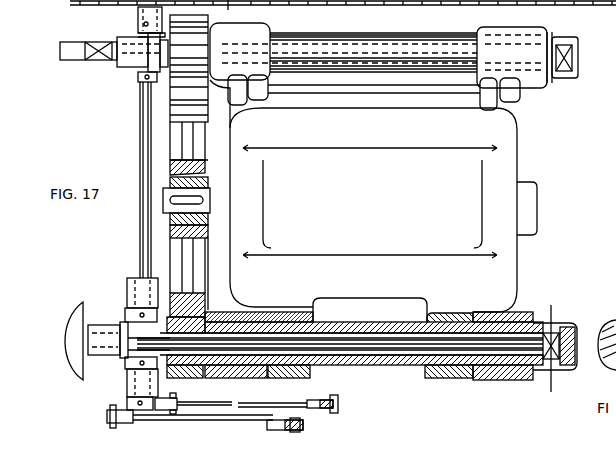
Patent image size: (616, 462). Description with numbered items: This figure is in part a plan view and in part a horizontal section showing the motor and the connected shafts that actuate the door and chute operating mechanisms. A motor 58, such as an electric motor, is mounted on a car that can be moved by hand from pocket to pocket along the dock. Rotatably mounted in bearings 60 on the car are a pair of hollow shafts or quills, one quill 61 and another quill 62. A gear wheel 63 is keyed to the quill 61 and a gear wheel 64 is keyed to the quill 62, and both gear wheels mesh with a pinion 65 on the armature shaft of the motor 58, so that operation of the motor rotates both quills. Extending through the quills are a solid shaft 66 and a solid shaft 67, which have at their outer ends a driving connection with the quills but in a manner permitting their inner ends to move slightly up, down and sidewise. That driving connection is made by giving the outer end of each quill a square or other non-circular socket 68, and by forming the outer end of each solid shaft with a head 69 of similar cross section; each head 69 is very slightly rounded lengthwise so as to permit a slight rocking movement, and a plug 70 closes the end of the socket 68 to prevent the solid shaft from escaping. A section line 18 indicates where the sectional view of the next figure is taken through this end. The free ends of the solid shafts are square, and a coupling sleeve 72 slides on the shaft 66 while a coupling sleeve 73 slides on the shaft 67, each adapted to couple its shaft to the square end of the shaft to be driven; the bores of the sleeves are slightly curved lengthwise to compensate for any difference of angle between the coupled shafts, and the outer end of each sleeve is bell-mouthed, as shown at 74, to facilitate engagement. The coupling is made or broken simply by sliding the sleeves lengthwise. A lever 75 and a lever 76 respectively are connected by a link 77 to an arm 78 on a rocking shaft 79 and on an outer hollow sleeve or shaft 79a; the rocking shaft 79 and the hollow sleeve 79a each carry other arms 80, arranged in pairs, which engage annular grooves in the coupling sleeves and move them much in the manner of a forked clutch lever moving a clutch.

The section line 18 is at (552, 350).
The motor 58 is at (373, 198).
The bearings 60 is at (500, 378).
The hollow shaft or quill 61 is at (383, 365).
The hollow shaft or quill 62 is at (378, 38).
The gear wheel 63 is at (196, 276).
The gear wheel 64 is at (196, 124).
The pinion 65 is at (210, 215).
The solid shaft 66 is at (345, 358).
The solid shaft 67 is at (530, 60).
The socket 68 is at (560, 333).
The head 69 is at (577, 331).
The plug 70 is at (577, 365).
The coupling sleeve 72 is at (112, 327).
The coupling sleeve 73 is at (128, 67).
The bell-mouth 74 is at (612, 228).
The lever 75 is at (300, 428).
The lever 76 is at (340, 404).
The link 77 is at (278, 403).
The arm 78 is at (171, 398).
The rocking shaft 79 is at (140, 240).
The outer hollow sleeve or shaft 79a is at (140, 278).
The arms 80 is at (138, 27).